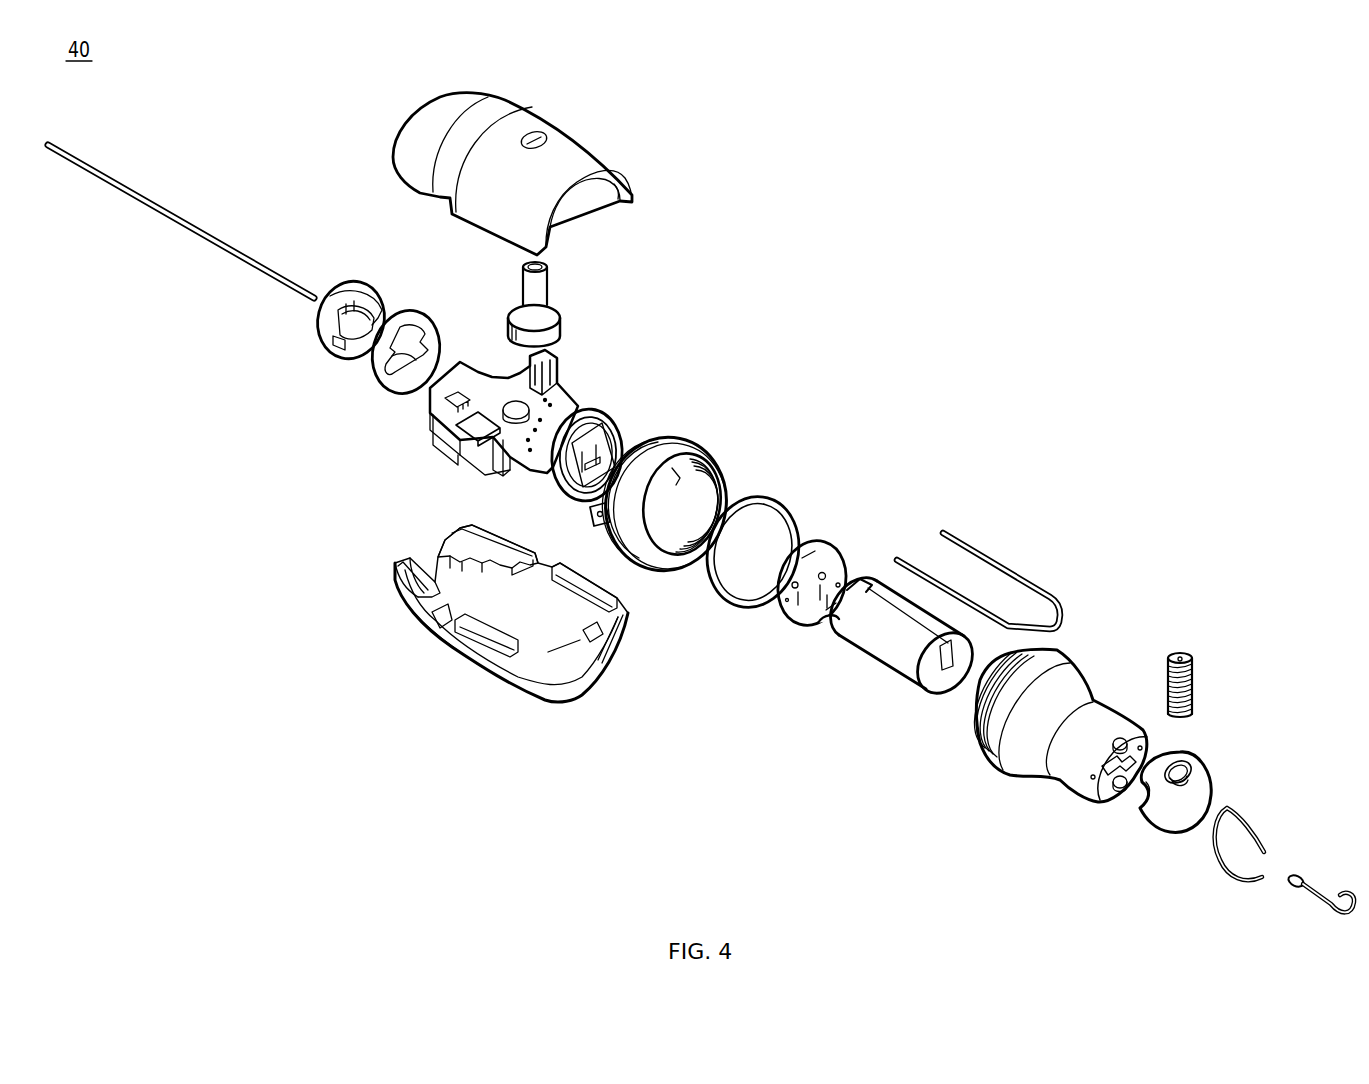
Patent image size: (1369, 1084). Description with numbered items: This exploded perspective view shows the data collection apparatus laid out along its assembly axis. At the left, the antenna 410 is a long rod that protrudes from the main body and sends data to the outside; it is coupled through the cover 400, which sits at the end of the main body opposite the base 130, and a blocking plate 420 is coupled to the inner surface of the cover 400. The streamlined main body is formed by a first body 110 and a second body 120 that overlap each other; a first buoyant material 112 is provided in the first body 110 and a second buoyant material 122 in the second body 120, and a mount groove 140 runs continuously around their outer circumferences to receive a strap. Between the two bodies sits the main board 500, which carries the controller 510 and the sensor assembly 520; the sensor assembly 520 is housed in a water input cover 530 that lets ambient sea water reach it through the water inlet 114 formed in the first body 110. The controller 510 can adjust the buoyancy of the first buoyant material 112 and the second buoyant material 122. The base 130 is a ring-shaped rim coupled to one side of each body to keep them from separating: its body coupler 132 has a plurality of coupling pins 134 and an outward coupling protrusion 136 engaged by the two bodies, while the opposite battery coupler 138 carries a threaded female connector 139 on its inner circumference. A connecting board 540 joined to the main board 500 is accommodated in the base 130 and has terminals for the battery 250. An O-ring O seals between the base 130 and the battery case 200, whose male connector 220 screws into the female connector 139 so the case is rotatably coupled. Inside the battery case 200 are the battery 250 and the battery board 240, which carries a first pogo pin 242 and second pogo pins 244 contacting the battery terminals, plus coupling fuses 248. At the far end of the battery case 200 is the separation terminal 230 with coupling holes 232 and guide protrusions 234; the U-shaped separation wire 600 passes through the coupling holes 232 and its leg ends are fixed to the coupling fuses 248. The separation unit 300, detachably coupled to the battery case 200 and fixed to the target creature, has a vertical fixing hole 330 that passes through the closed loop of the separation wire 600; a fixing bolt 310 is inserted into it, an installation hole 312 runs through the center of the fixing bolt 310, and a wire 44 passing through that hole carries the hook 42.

The antenna 410 is at (183, 218).
The first body 110 is at (493, 176).
The first buoyant material 112 is at (583, 208).
The water inlet 114 is at (542, 138).
The mount groove 140 is at (525, 103).
The cover 400 is at (358, 280).
The blocking plate 420 is at (416, 306).
The water input cover 530 is at (546, 293).
The sensor assembly 520 is at (522, 402).
The main board 500 is at (500, 415).
The controller 510 is at (472, 448).
The connecting board 540 is at (611, 421).
The base 130 is at (655, 475).
The body coupler 132 is at (665, 436).
The coupling pins 134 is at (590, 512).
The coupling protrusion 136 is at (688, 440).
The battery coupler 138 is at (714, 468).
The female connector 139 is at (712, 490).
The O-ring O is at (786, 505).
The battery board 240 is at (831, 580).
The first pogo pin 242 is at (825, 572).
The second pogo pins 244 is at (810, 624).
The coupling fuses 248 is at (843, 585).
The battery 250 is at (877, 653).
The separation wire 600 is at (970, 546).
The battery case 200 is at (1031, 761).
The male connector 220 is at (972, 737).
The separation terminal 230 is at (1100, 795).
The coupling holes 232 is at (1092, 778).
The guide protrusions 234 is at (1117, 800).
The separation unit 300 is at (1220, 769).
The fixing bolt 310 is at (1208, 658).
The installation hole 312 is at (1180, 656).
The fixing hole 330 is at (1192, 765).
The wire 44 is at (1256, 831).
The hook 42 is at (1314, 887).
The second body 120 is at (511, 631).
The second buoyant material 122 is at (530, 632).